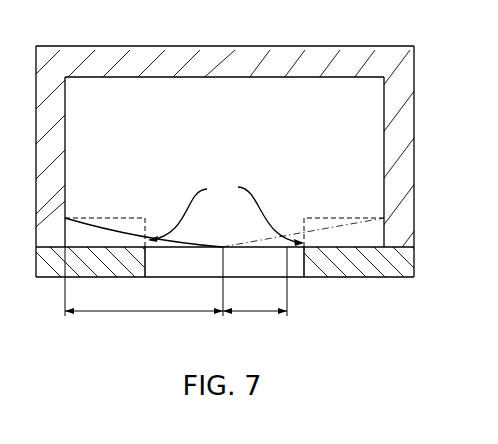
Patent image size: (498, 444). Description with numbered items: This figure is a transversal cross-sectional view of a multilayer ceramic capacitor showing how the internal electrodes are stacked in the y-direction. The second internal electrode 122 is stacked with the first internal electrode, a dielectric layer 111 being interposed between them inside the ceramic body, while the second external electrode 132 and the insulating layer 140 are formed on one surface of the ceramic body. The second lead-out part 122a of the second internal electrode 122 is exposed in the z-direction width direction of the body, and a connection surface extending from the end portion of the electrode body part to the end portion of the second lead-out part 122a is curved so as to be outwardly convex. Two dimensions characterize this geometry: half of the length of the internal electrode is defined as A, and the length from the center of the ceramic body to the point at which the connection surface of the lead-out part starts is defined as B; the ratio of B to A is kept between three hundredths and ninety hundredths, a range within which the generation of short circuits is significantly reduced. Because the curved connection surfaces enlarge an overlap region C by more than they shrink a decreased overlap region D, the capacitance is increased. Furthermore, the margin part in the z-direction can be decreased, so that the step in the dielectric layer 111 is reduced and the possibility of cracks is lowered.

The dielectric layer 111 is at (326, 50).
The second internal electrode 122 is at (372, 178).
The second lead-out part 122a is at (327, 240).
The second external electrode 132 is at (408, 262).
The insulating layer 140 is at (192, 267).
The half of the length of the internal electrode A is at (144, 281).
The length from the center of the ceramic body to the start of the connection surfac B is at (255, 281).
The increased overlap region C is at (107, 218).
The decreased overlap region D is at (222, 247).